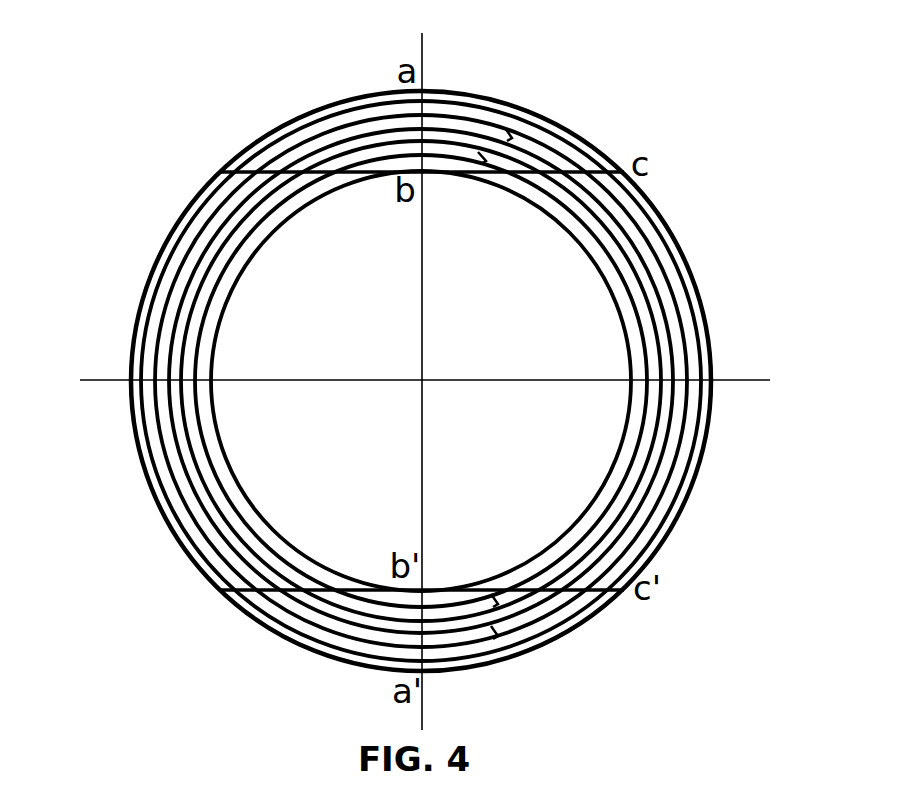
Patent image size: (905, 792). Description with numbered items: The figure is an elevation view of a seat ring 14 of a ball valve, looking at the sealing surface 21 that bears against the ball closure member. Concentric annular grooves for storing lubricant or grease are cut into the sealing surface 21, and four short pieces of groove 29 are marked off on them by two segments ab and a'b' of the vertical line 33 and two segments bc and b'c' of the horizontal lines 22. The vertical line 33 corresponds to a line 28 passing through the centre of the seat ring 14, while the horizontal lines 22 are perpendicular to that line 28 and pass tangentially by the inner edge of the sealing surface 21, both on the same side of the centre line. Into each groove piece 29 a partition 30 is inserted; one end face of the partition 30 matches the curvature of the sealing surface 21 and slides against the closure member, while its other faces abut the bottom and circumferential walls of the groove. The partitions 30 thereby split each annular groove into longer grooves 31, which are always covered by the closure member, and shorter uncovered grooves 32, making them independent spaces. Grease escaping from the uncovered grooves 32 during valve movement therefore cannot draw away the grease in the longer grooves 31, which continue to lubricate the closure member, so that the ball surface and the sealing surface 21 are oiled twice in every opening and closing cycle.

The seat ring 14 is at (724, 277).
The sealing surface 21 is at (640, 490).
The horizontal lines 22 is at (583, 172).
The line passing through centre of the seat rings 28 is at (402, 128).
The grooves 29 is at (470, 135).
The partition 30 is at (488, 158).
The longer grooves 31 is at (223, 510).
The shorter uncovered grooves 32 is at (645, 452).
The vertical line 33 is at (422, 60).